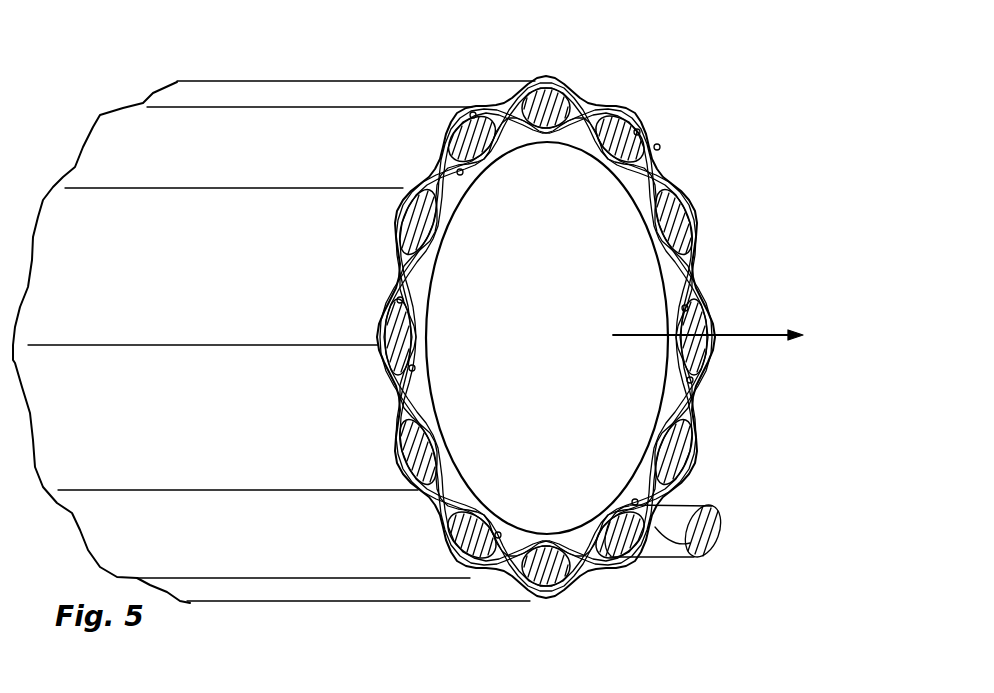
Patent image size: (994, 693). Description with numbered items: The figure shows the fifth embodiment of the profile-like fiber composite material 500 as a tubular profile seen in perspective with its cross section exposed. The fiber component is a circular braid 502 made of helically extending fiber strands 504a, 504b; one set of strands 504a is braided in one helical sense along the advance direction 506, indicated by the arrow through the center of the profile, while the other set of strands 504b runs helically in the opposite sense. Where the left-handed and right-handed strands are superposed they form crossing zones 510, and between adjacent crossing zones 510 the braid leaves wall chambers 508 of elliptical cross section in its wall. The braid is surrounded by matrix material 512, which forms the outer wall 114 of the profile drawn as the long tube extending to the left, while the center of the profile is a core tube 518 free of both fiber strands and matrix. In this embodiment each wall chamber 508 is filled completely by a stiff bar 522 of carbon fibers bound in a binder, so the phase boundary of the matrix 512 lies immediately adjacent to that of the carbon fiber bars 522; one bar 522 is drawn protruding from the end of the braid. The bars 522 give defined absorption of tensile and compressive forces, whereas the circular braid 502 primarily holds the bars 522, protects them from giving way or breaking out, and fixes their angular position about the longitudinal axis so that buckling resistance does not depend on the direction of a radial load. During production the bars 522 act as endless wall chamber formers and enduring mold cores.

The outer wall 114 is at (261, 135).
The fiber composite material 500 is at (427, 312).
The circular braid 502 is at (609, 310).
The fiber strands 504a is at (598, 112).
The fiber strands 504b is at (643, 128).
The advance direction 506 is at (736, 335).
The wall chambers 508 is at (668, 207).
The crossing zones 510 is at (694, 255).
The matrix material 512 is at (658, 165).
The core tube 518 is at (630, 417).
The carbon fiber bars 522 is at (712, 532).